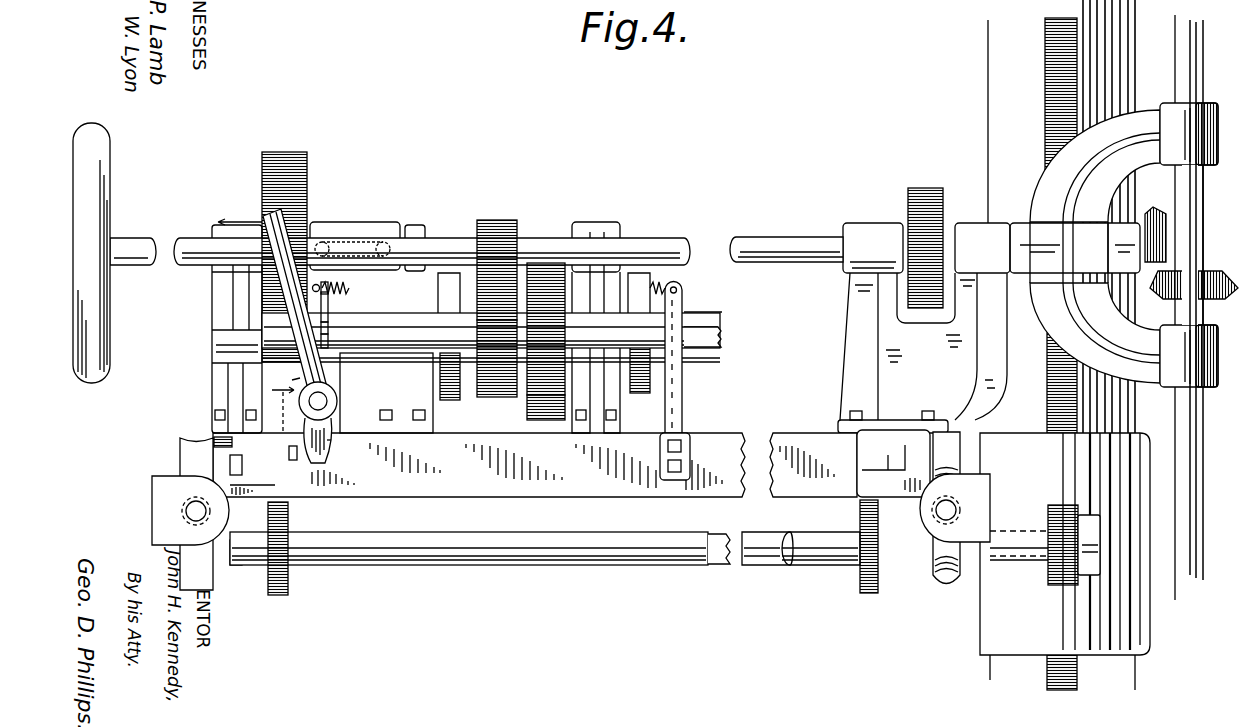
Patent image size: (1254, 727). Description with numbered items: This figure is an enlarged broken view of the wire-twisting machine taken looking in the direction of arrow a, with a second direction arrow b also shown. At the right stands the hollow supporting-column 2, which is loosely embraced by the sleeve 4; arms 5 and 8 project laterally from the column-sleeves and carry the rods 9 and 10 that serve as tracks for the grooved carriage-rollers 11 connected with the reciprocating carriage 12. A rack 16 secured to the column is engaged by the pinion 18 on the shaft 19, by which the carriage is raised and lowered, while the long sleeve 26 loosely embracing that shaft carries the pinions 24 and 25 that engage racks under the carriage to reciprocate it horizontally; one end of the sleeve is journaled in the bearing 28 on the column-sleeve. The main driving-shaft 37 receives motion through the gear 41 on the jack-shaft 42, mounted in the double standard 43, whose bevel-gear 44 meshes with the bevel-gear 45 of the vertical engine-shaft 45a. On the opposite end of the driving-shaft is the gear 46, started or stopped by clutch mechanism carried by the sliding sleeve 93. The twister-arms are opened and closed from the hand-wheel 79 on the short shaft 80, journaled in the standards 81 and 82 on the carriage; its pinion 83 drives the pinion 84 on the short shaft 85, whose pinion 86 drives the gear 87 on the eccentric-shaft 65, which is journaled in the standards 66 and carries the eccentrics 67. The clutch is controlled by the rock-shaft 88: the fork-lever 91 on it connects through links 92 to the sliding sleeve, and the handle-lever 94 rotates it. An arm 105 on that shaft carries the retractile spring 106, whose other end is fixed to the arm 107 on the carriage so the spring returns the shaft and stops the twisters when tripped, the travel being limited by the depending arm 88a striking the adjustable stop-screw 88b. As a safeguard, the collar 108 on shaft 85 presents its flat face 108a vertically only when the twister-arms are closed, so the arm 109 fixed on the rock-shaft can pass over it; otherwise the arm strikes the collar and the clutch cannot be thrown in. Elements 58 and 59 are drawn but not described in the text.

The supporting-column 2 is at (1081, 345).
The sleeve 4 is at (1065, 544).
The arm 5 is at (190, 510).
The arm 8 is at (955, 508).
The rod 9 is at (196, 511).
The rod 10 is at (946, 510).
The grooved carriage-roller 11 is at (570, 510).
The reciprocating carriage 12 is at (535, 465).
The rack 16 is at (1045, 116).
The pinion 18 is at (1064, 586).
The shaft 19 is at (730, 538).
The pinion 24 is at (290, 535).
The pinion 25 is at (860, 592).
The long sleeve 26 is at (804, 525).
The bearing 28 is at (1019, 537).
The main driving-shaft 37 is at (733, 243).
The gear 41 is at (945, 206).
The jack-shaft 42 is at (843, 258).
The double standard 43 is at (924, 328).
The bevel-gear 44 is at (1157, 212).
The bevel-gear 45 is at (1225, 278).
The vertical engine-shaft 45a is at (1216, 478).
The gear 46 is at (284, 153).
The rod 58 is at (706, 308).
The rod 59 is at (706, 362).
The eccentric-shaft 65 is at (711, 334).
The standard 66 is at (404, 386).
The eccentric 67 is at (440, 298).
The hand-wheel 79 is at (91, 253).
The short shaft 80 is at (166, 240).
The standard 81 is at (237, 329).
The standard 82 is at (596, 327).
The pinion 83 is at (500, 220).
The pinion 84 is at (498, 397).
The short shaft 85 is at (491, 330).
The pinion 86 is at (566, 336).
The gear 87 is at (548, 421).
The shaft 88 is at (300, 336).
The arm 88a is at (329, 441).
The adjustable stop-screw 88b is at (286, 441).
The fork-lever 91 is at (314, 279).
The link 92 is at (360, 240).
The sliding sleeve 93 is at (340, 222).
The handle-lever 94 is at (304, 365).
The arm 105 is at (323, 354).
The retractile spring 106 is at (675, 286).
The arm 107 is at (683, 404).
The collar 108 is at (329, 320).
The flat face 108a is at (329, 313).
The arm 109 is at (330, 338).
The arrow a is at (240, 215).
The arrow b is at (283, 403).